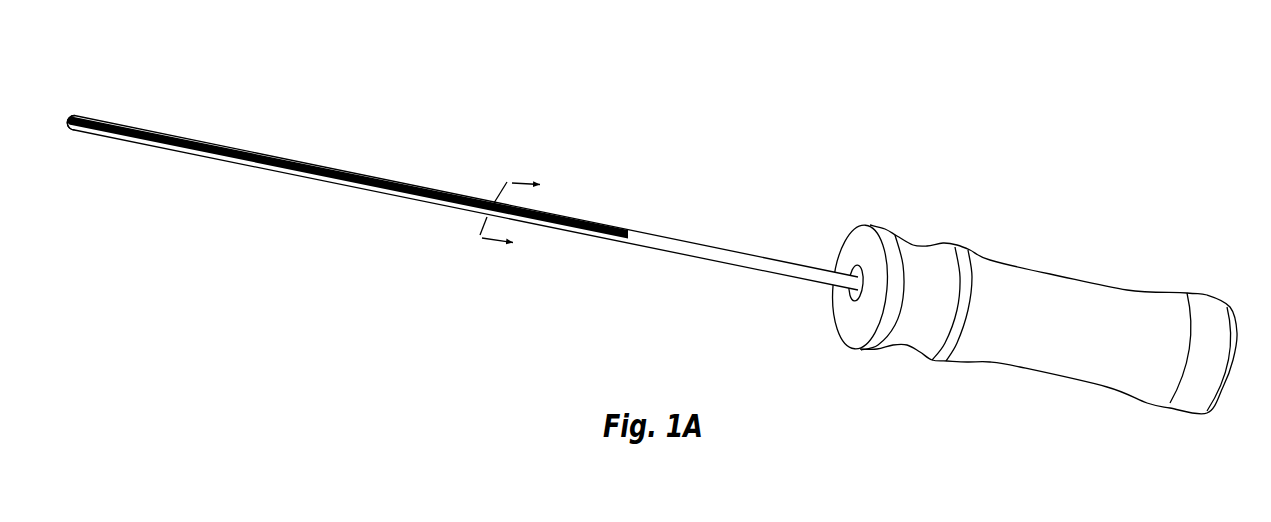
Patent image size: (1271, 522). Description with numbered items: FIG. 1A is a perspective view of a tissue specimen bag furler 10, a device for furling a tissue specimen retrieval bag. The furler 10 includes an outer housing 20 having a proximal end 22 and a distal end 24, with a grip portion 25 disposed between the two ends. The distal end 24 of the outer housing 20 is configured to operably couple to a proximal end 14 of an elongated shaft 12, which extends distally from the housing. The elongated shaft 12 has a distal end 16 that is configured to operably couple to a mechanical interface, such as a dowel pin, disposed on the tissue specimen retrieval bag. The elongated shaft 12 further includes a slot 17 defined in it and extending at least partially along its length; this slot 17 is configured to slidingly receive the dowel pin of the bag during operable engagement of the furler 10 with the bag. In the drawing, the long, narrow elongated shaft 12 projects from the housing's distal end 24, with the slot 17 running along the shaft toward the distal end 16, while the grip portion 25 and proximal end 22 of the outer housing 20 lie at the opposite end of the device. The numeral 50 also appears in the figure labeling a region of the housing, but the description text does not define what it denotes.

The tissue specimen bag furler 10 is at (652, 268).
The elongated shaft 12 is at (705, 245).
The proximal end of elongated shaft 14 is at (841, 285).
The distal end of elongated shaft 16 is at (75, 113).
The slot 17 is at (333, 166).
The outer housing 20 is at (1177, 307).
The proximal end of outer housing 22 is at (1213, 385).
The distal end of outer housing 24 is at (888, 236).
The grip portion 25 is at (1090, 279).
The grip portion of handle 50 is at (1019, 370).